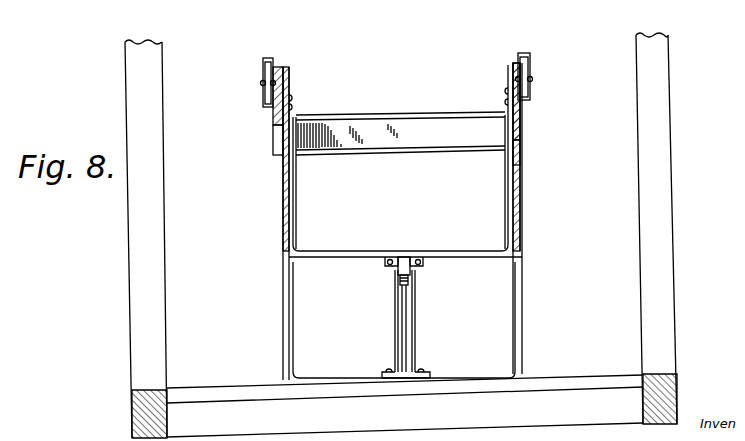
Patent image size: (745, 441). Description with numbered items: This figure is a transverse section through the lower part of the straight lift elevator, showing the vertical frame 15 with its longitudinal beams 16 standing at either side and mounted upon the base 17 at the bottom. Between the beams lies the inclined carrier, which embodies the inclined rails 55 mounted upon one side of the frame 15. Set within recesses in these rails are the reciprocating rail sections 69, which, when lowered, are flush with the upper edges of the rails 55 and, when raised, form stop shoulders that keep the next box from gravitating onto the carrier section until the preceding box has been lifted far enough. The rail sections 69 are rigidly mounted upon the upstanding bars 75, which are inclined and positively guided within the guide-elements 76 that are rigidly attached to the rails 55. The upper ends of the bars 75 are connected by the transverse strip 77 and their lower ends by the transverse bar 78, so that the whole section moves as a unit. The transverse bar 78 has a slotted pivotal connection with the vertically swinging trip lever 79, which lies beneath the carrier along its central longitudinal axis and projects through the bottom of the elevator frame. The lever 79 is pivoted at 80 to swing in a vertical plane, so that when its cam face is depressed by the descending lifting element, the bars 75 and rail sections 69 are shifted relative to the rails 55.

The vertical frame 15 is at (140, 228).
The longitudinal beams 16 is at (148, 281).
The base 17 is at (145, 414).
The inclined rails 55 is at (273, 130).
The rail sections 69 is at (279, 67).
The upstanding bars 75 is at (296, 203).
The guide-elements 76 is at (283, 237).
The transverse strip 77 is at (383, 115).
The transverse bar 78 is at (357, 256).
The trip lever 79 is at (408, 292).
The pivot 80 is at (412, 277).